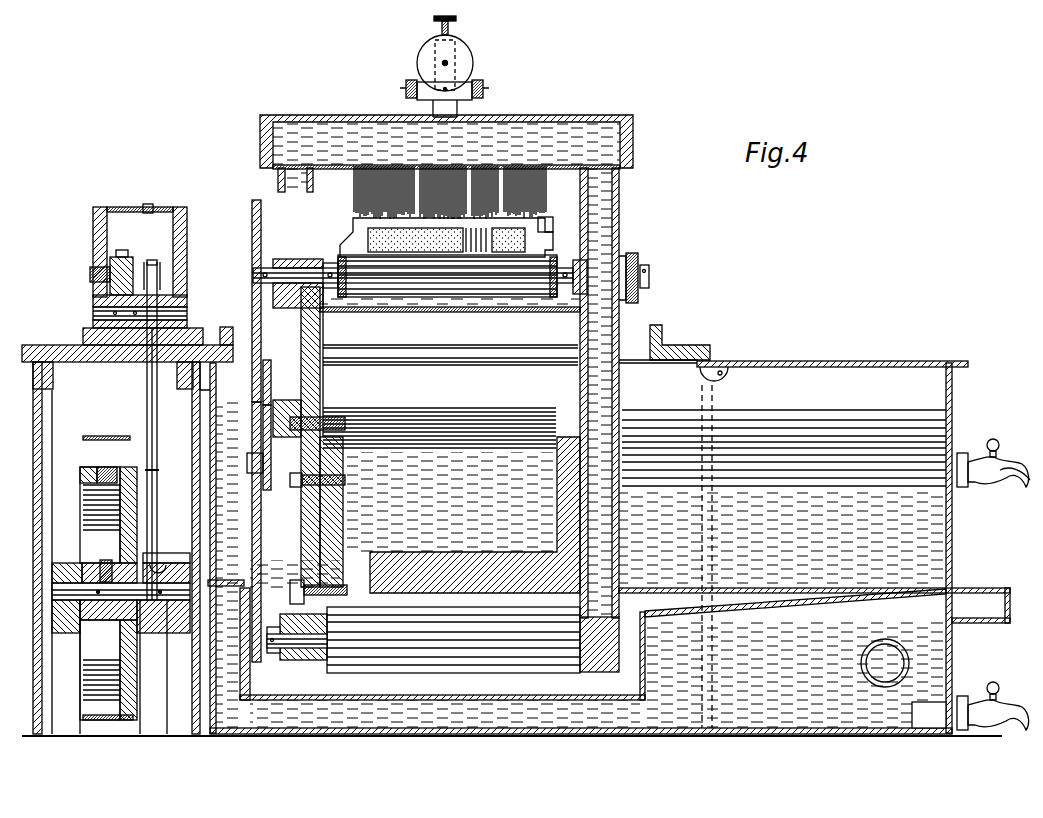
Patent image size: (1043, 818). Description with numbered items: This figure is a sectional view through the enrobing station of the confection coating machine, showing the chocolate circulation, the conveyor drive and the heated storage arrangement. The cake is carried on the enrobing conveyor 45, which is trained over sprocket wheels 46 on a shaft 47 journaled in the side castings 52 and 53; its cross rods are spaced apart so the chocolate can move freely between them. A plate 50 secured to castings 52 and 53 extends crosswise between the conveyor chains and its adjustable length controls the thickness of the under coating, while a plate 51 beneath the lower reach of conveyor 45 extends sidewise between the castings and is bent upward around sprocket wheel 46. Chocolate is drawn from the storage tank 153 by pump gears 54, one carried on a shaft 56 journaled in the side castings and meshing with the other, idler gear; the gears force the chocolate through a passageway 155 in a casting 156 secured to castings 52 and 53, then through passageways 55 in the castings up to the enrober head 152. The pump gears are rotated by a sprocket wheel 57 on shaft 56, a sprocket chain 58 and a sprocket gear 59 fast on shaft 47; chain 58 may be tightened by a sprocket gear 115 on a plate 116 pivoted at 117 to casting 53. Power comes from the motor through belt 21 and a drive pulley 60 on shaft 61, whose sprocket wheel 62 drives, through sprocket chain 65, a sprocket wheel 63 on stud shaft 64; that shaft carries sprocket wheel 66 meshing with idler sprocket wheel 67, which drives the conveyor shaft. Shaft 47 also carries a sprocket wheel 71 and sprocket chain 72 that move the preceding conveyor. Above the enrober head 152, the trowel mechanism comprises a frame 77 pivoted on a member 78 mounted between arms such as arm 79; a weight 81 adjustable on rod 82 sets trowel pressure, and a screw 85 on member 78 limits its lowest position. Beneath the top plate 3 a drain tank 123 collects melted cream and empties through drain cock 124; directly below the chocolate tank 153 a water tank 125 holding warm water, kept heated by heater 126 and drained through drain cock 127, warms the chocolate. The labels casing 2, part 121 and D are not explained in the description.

The casing 2 is at (33, 394).
The top plate 3 is at (680, 352).
The belt 21 is at (96, 438).
The enrobing conveyor 45 is at (446, 300).
The sprocket wheels 46 is at (337, 268).
The shaft 47 is at (290, 268).
The plate 50 is at (404, 280).
The plate 51 is at (489, 306).
The side casting 52 is at (586, 322).
The side casting 53 is at (318, 333).
The pump gears 54 is at (462, 665).
The passageways 55 is at (290, 184).
The shaft 56 is at (310, 645).
The sprocket wheel 57 is at (272, 700).
The sprocket chain 58 is at (262, 538).
The sprocket gear 59 is at (252, 233).
The drive pulley 60 is at (90, 470).
The shaft 61 is at (60, 595).
The sprocket wheel 62 is at (160, 565).
The sprocket wheel 63 is at (155, 268).
The stud shaft 64 is at (187, 312).
The sprocket chain 65 is at (146, 406).
The sprocket wheel 66 is at (108, 300).
The idler sprocket wheel 67 is at (123, 258).
The sprocket wheel 71 is at (660, 262).
The sprocket chain 72 is at (632, 252).
The frame 77 is at (483, 84).
The member 78 is at (440, 105).
The arm 79 is at (459, 108).
The weight 81 is at (466, 50).
The rod 82 is at (448, 63).
The screw 85 is at (476, 20).
The sprocket gear 115 is at (262, 494).
The plate 116 is at (262, 388).
The pivot 117 is at (262, 420).
The bracket 121 is at (298, 620).
The drain tank 123 is at (830, 344).
The drain cock 124 is at (1003, 452).
The water tank 125 is at (785, 712).
The heater 126 is at (905, 657).
The drain cock 127 is at (1003, 697).
The enrober head 152 is at (538, 127).
The chocolate storage tank 153 is at (940, 565).
The passageway 155 is at (492, 592).
The casting 156 is at (424, 556).
The cover D is at (318, 133).